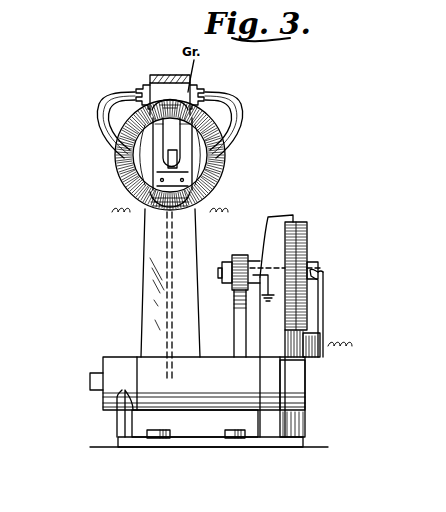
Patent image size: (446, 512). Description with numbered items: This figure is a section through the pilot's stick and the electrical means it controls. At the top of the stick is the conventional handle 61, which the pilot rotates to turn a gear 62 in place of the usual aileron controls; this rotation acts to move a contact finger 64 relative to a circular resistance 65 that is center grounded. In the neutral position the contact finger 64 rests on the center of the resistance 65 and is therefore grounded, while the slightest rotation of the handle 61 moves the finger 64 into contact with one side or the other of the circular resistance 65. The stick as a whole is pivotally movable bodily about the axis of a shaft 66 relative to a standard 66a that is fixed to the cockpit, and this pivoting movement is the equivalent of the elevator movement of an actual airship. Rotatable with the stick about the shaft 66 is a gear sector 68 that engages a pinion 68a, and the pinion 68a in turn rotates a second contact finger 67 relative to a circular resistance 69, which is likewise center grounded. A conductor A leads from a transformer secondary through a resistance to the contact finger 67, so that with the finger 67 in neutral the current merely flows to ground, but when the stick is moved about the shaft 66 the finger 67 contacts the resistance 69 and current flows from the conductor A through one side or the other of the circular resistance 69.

The handle 61 is at (98, 124).
The gear 62 is at (140, 86).
The contact finger 64 is at (175, 145).
The circular resistance 65 is at (117, 172).
The shaft 66 is at (103, 374).
The standard 66a is at (197, 440).
The contact finger 67 is at (323, 286).
The gear sector 68 is at (235, 296).
The pinion 68a is at (240, 256).
The circular resistance 69 is at (300, 225).
The conductor A is at (342, 348).